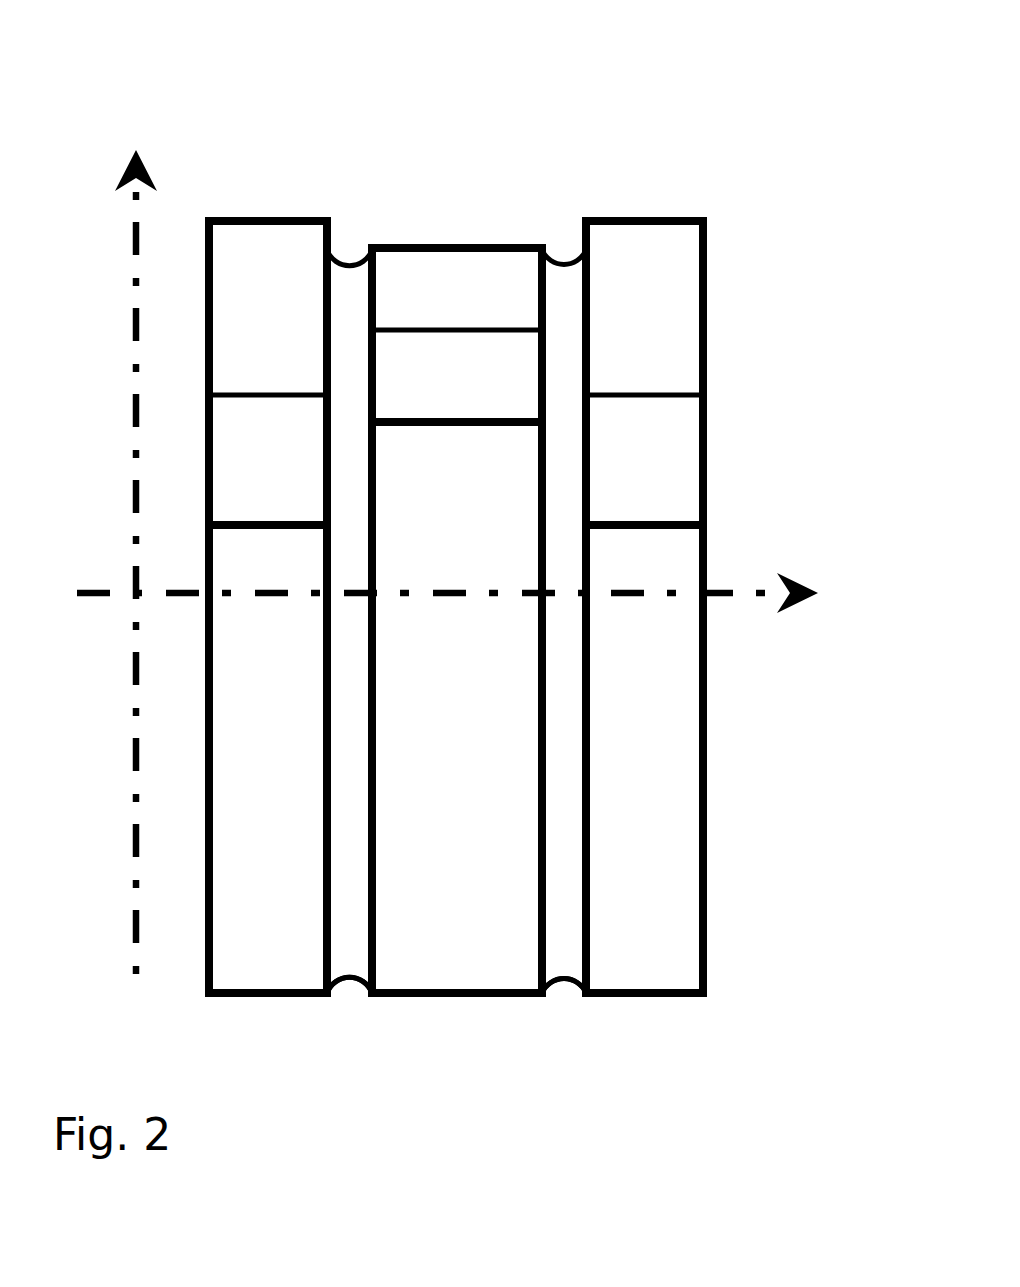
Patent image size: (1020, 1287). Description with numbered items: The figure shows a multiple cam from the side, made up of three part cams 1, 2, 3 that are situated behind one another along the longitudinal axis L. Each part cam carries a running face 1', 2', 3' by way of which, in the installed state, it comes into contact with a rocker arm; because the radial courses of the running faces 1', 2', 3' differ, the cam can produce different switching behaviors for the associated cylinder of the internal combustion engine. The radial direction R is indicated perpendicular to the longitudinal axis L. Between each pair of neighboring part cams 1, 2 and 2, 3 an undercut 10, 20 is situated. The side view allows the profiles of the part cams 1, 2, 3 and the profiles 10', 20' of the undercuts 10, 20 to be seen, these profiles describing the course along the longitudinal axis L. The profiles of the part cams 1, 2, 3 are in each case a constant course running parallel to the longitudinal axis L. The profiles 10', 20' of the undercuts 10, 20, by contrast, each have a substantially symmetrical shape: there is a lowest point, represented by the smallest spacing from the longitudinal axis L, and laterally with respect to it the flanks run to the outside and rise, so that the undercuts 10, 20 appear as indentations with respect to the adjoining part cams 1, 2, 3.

The part cam 1 is at (346, 501).
The running face 1' is at (288, 130).
The part cam 2 is at (489, 498).
The running face 2' is at (457, 161).
The part cam 3 is at (662, 531).
The running face 3' is at (646, 113).
The undercut 10 is at (418, 699).
The profile of the undercut 10' is at (346, 1050).
The undercut 20 is at (605, 699).
The profile of the undercut 20' is at (538, 1038).
The radial direction R is at (128, 732).
The longitudinal axis L is at (723, 595).